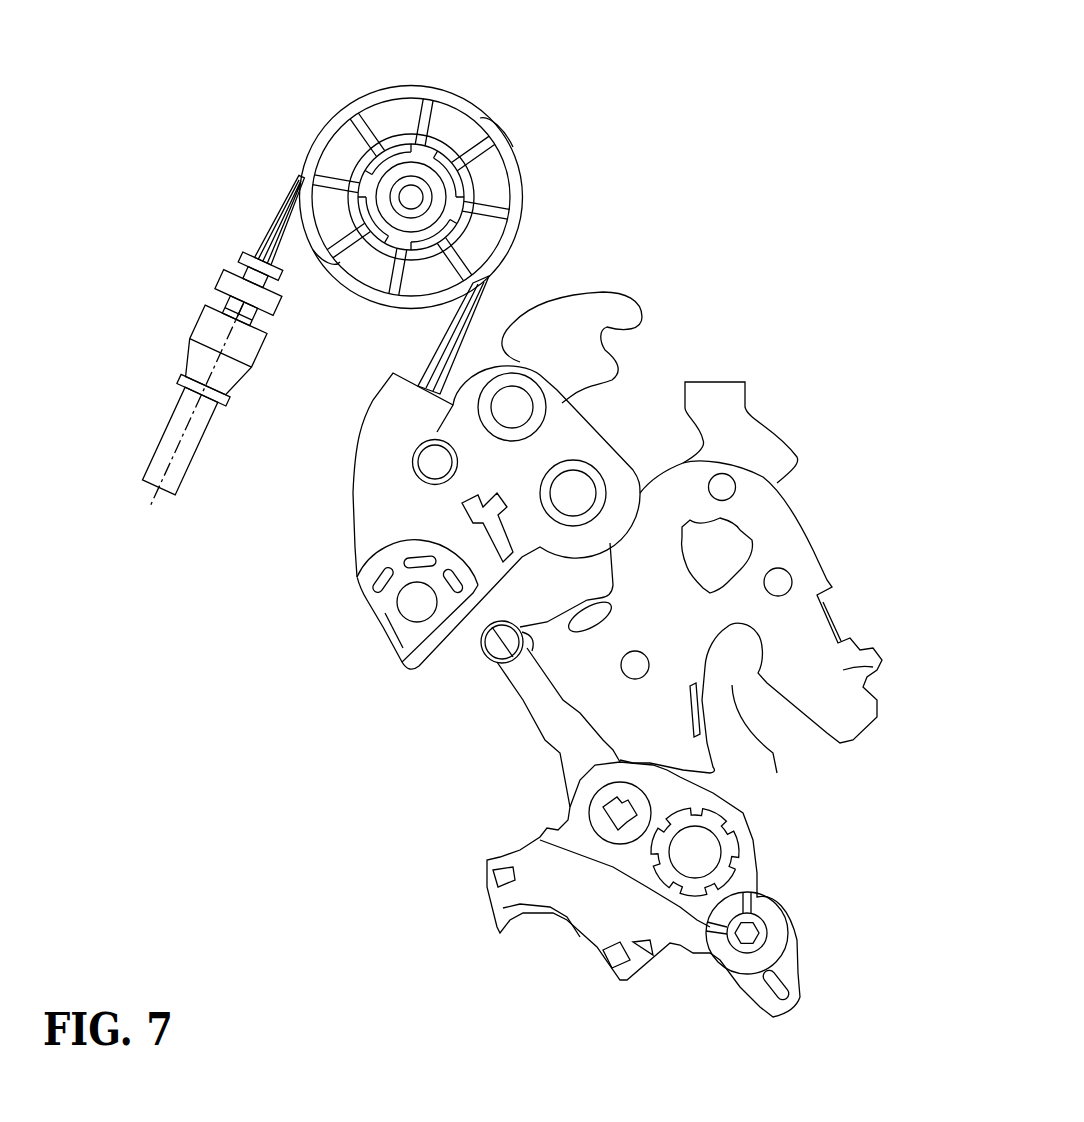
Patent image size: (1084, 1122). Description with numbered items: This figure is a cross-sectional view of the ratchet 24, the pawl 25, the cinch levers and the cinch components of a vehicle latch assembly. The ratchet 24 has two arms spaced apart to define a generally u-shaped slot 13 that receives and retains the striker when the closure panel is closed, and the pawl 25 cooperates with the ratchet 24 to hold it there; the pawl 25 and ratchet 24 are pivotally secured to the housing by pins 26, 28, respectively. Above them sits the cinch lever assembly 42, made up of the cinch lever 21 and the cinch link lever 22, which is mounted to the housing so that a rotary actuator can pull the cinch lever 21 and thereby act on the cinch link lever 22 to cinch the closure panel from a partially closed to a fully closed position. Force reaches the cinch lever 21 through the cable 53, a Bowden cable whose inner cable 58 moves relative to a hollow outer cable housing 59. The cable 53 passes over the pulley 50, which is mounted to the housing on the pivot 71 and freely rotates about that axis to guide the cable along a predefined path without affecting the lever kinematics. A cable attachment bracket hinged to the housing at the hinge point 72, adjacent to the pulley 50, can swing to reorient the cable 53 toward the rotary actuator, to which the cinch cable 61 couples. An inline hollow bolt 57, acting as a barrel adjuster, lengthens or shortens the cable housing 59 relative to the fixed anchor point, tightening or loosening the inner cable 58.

The slot 13 is at (735, 688).
The cinch lever 21 is at (565, 433).
The cinch link lever 22 is at (600, 307).
The ratchet 24 is at (875, 673).
The pawl 25 is at (540, 700).
The pin 26 is at (492, 648).
The pin 28 is at (724, 547).
The cinch lever assembly 42 is at (385, 743).
The pulley 50 is at (443, 100).
The cable 53 is at (283, 205).
The inline hollow bolt 57 is at (220, 284).
The inner cable 58 is at (150, 515).
The cable housing 59 is at (198, 455).
The cinch cable 61 is at (203, 326).
The pivot 71 is at (410, 197).
The hinge point 72 is at (418, 194).